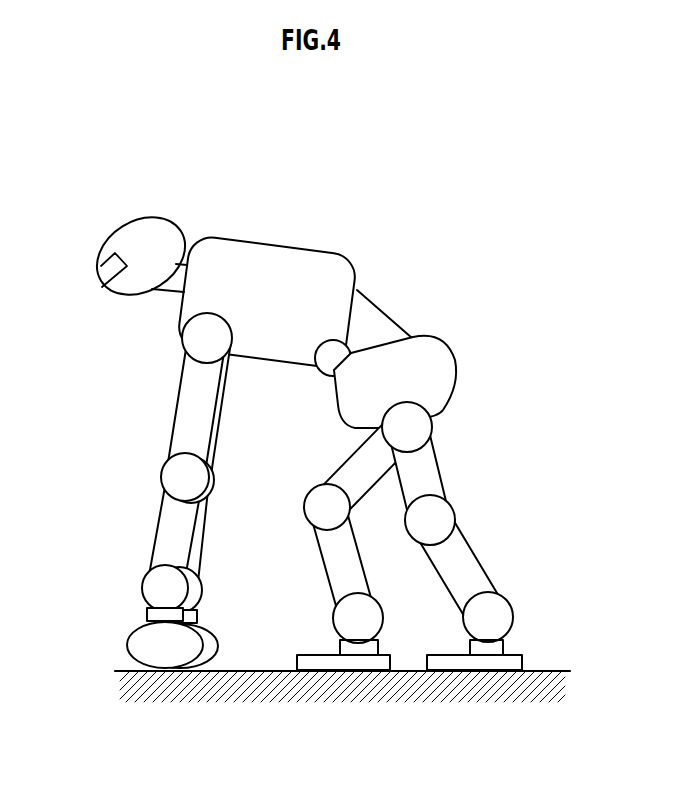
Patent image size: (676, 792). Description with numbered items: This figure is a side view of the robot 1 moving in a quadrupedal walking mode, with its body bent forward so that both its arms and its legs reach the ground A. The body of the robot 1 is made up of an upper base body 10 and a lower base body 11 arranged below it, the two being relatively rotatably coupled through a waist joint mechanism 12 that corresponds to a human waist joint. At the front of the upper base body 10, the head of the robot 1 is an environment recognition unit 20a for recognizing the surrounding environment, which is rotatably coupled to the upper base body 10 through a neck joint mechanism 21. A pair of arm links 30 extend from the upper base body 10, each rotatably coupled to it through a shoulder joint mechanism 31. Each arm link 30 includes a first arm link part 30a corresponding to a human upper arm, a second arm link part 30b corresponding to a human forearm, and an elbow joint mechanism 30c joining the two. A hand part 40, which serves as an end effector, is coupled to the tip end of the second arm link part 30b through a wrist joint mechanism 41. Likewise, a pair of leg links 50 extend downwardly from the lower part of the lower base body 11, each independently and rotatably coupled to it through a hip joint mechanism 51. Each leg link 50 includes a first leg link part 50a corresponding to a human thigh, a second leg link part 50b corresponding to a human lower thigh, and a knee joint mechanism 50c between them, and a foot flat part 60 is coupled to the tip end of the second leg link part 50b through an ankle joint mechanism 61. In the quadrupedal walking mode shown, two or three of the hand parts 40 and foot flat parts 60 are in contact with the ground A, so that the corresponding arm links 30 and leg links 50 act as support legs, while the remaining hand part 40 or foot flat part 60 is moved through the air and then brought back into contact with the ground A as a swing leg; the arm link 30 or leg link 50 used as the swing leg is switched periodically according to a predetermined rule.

The robot 1 is at (100, 190).
The upper base body 10 is at (237, 232).
The lower base body 11 is at (440, 337).
The waist joint mechanism 12 is at (388, 304).
The environment recognition unit 20a is at (147, 212).
The neck joint mechanism 21 is at (163, 293).
The arm link 30 is at (168, 463).
The first arm link part 30a is at (183, 455).
The second arm link part 30b is at (177, 512).
The elbow joint mechanism 30c is at (172, 478).
The shoulder joint mechanism 31 is at (198, 346).
The hand part 40 is at (130, 645).
The wrist joint mechanism 41 is at (143, 590).
The leg link 50 is at (406, 501).
The first leg link part 50a is at (348, 447).
The second leg link part 50b is at (308, 533).
The knee joint mechanism 50c is at (322, 498).
The hip joint mechanism 51 is at (420, 425).
The foot flat part 60 is at (312, 654).
The ankle joint mechanism 61 is at (343, 617).
The ground A is at (553, 671).